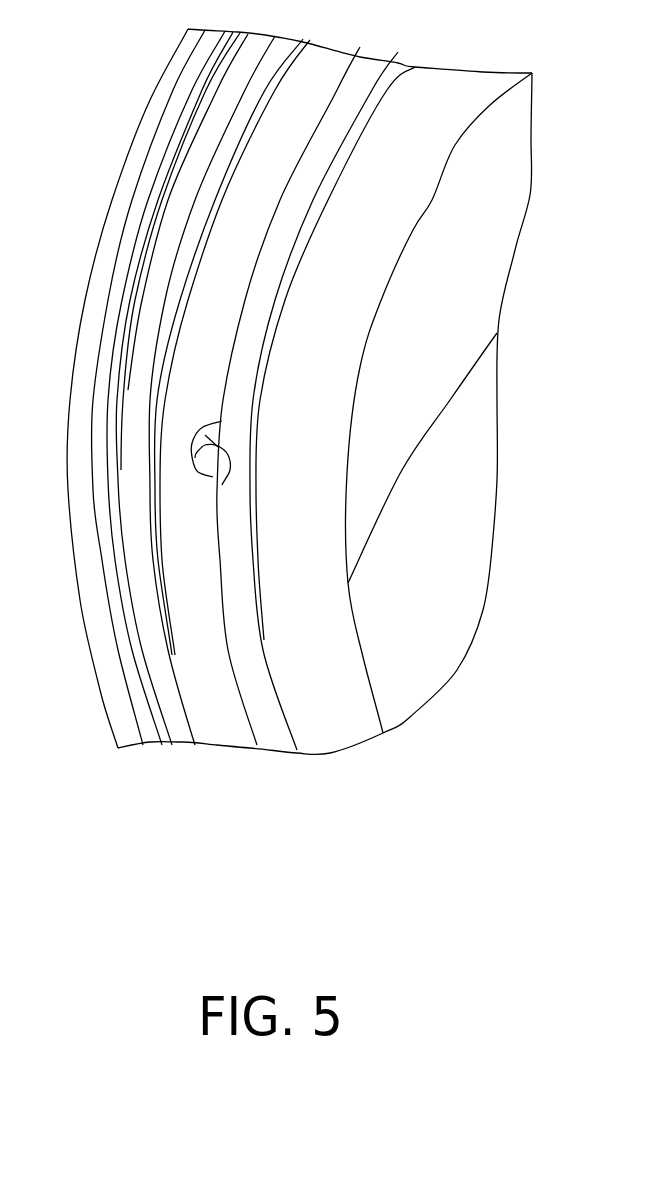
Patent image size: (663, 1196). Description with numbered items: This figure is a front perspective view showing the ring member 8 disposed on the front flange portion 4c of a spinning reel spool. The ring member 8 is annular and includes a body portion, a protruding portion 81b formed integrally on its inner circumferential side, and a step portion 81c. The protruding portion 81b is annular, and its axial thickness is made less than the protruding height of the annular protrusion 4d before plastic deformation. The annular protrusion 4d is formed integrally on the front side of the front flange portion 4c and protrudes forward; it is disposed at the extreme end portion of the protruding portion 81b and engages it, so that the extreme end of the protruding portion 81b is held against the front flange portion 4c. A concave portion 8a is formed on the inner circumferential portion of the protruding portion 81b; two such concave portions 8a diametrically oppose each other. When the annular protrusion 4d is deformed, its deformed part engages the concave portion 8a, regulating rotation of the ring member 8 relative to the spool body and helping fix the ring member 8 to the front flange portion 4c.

The ring member 8 is at (95, 720).
The concave portion 8a is at (222, 485).
The protruding portion 81b is at (220, 717).
The step portion 81c is at (180, 728).
The front flange portion 4c is at (347, 765).
The annular protrusion 4d is at (268, 735).